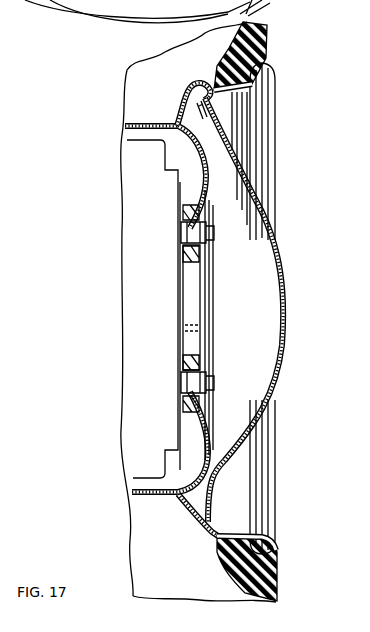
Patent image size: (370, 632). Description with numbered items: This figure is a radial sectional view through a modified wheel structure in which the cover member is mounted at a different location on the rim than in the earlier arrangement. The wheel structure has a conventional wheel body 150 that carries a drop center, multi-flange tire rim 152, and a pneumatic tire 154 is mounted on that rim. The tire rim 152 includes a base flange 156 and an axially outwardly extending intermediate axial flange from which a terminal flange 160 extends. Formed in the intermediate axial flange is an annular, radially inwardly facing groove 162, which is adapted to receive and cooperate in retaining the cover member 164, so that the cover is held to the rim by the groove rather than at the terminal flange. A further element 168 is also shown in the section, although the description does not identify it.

The wheel body 150 is at (125, 137).
The tire rim 152 is at (171, 112).
The pneumatic tire 154 is at (278, 27).
The base flange 156 is at (127, 123).
The terminal flange 160 is at (270, 61).
The groove 162 is at (188, 88).
The cover member 164 is at (290, 283).
The fastening tab 168 is at (193, 84).